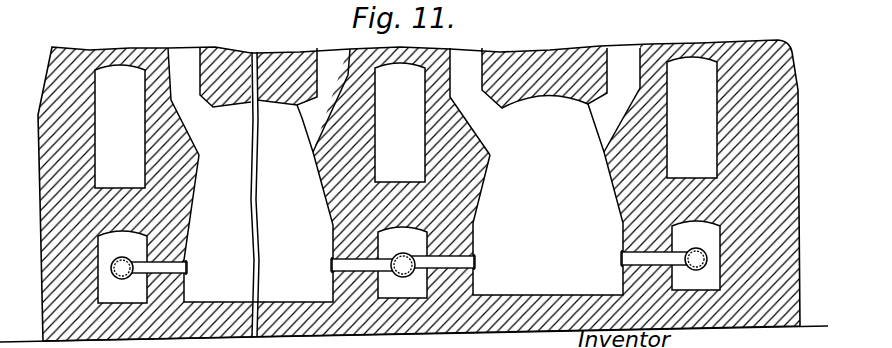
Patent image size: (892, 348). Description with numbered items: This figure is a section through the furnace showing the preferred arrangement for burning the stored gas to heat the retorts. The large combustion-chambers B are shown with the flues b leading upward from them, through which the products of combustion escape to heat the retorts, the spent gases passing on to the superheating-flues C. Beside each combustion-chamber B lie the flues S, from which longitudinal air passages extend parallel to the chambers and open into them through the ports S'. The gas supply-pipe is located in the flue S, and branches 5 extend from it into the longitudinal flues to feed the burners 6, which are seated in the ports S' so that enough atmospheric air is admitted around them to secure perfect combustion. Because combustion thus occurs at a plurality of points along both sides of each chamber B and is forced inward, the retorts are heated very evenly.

The superheating-flues C is at (383, 130).
The combustion-chambers B is at (404, 191).
The flues b is at (313, 121).
The flue S is at (409, 262).
The branches 5 is at (130, 258).
The ports S' is at (404, 252).
The burners 6 is at (188, 264).